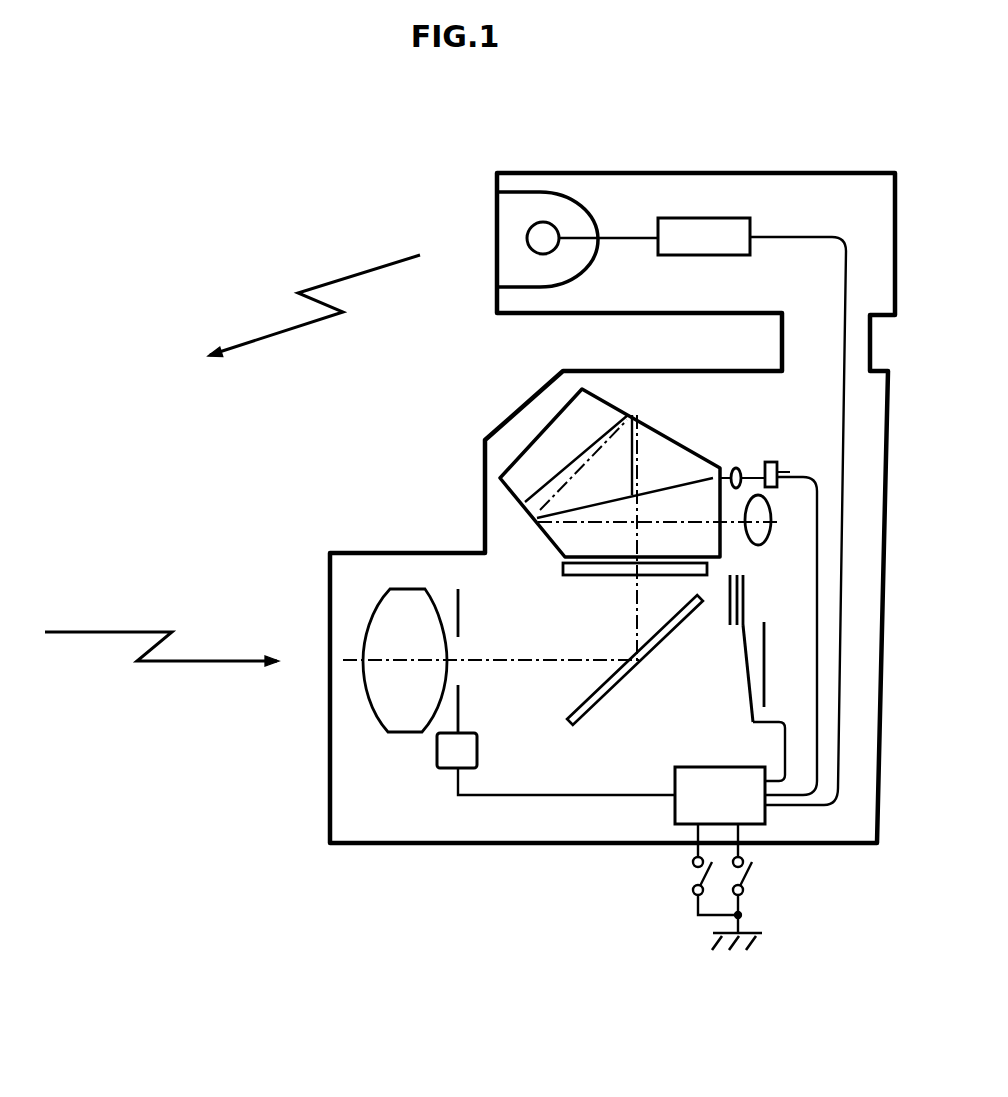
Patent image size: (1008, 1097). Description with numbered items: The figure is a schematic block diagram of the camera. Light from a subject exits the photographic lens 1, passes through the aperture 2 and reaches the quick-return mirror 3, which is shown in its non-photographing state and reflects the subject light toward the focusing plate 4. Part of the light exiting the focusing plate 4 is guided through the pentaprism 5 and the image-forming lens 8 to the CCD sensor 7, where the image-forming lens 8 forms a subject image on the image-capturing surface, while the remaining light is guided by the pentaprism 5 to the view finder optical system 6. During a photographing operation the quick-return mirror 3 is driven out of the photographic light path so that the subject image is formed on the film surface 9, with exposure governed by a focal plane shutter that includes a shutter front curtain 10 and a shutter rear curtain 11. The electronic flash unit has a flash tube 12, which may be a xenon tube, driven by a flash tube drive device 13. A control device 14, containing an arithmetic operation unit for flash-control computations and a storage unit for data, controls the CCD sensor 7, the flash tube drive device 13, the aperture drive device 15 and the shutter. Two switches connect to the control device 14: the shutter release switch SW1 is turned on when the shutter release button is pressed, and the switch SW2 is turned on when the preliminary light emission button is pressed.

The photographic lens 1 is at (405, 733).
The aperture 2 is at (461, 614).
The quick-return mirror 3 is at (608, 692).
The focusing plate 4 is at (585, 577).
The pentaprism 5 is at (662, 434).
The view finder optical system 6 is at (769, 540).
The CCD sensor 7 is at (772, 462).
The image-forming lens 8 is at (736, 468).
The film surface 9 is at (766, 660).
The shutter front curtain 10 is at (750, 708).
The shutter rear curtain 11 is at (746, 595).
The flash tube 12 is at (538, 222).
The flash tube drive device 13 is at (693, 218).
The control device 14 is at (675, 815).
The aperture drive device 15 is at (479, 750).
The shutter release switch SW1 is at (752, 878).
The switch SW2 is at (695, 882).